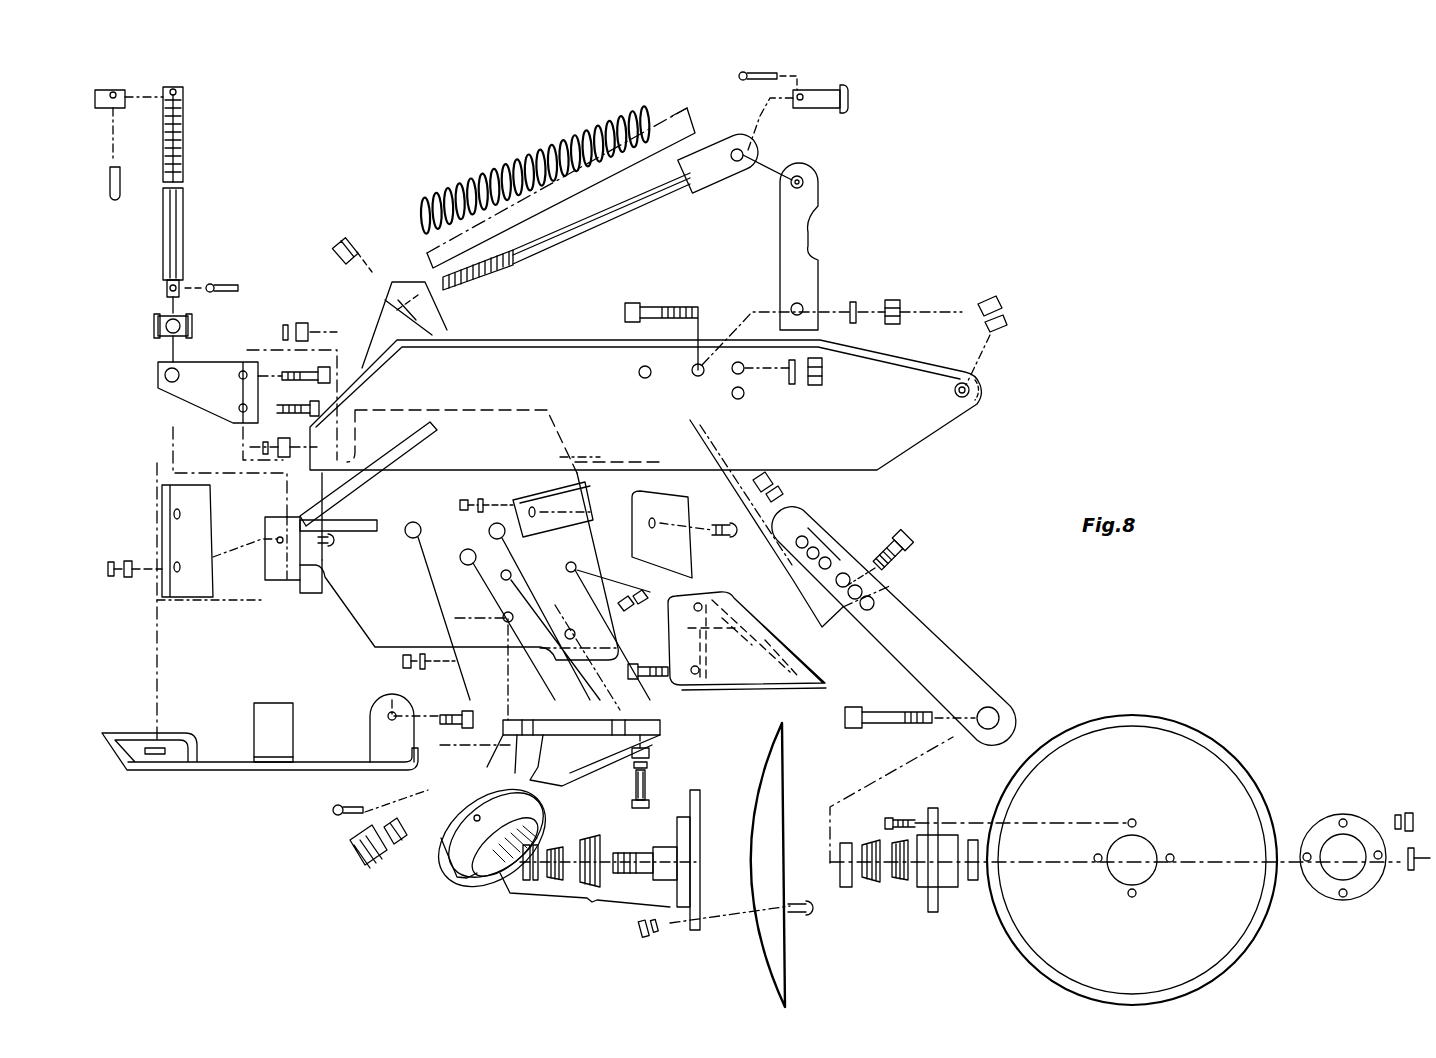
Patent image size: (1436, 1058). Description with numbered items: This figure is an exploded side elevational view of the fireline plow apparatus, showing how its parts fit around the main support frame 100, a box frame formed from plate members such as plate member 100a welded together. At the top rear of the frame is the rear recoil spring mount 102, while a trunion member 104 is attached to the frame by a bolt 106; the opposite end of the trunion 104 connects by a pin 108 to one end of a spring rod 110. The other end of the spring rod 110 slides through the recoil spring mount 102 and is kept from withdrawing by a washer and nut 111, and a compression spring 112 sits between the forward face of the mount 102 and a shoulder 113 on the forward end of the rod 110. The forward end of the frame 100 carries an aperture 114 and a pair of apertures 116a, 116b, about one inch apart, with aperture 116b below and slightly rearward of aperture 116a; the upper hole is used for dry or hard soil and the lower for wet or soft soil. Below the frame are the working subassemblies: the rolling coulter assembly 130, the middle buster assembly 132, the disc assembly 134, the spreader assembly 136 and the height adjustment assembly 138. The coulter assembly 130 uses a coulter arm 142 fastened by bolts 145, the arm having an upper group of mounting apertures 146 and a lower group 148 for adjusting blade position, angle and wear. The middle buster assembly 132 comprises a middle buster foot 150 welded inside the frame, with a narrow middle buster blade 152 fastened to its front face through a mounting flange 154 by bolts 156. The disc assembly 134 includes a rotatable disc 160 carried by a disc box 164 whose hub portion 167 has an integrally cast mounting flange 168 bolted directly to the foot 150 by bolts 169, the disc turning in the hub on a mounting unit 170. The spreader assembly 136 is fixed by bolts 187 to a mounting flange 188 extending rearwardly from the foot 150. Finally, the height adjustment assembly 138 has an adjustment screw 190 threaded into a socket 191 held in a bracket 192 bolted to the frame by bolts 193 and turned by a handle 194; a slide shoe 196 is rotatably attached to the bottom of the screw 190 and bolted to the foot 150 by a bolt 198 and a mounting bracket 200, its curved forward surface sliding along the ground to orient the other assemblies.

The main support frame 100 is at (495, 330).
The plate member 100a is at (522, 386).
The rear recoil spring mount 102 is at (408, 333).
The trunion member 104 is at (780, 250).
The bolt 106 is at (648, 300).
The pin 108 is at (825, 88).
The spring rod 110 is at (632, 205).
The washer and nut 111 is at (333, 246).
The compression spring 112 is at (492, 160).
The shoulder 113 is at (703, 185).
The aperture 114 is at (955, 390).
The aperture 116a is at (732, 375).
The aperture 116b is at (744, 396).
The rolling coulter assembly 130 is at (1200, 725).
The middle buster assembly 132 is at (725, 698).
The disc assembly 134 is at (505, 935).
The spreader assembly 136 is at (160, 517).
The height adjustment assembly 138 is at (215, 778).
The coulter arm 142 is at (935, 651).
The bolt 145 is at (918, 525).
The upper group of mounting apertures 146 is at (832, 535).
The lower group of mounting apertures 148 is at (855, 618).
The middle buster foot 150 is at (412, 609).
The middle buster blade 152 is at (735, 672).
The mounting flange 154 is at (706, 690).
The bolt 156 is at (668, 667).
The rotatable disc 160 is at (760, 968).
The disc box 164 is at (430, 838).
The hub portion 167 is at (457, 790).
The mounting flange 168 is at (580, 720).
The bolt 169 is at (652, 785).
The mounting unit 170 is at (656, 863).
The bolt 187 is at (332, 548).
The mounting flange 188 is at (290, 593).
The adjustment screw 190 is at (183, 210).
The socket 191 is at (155, 324).
The bracket 192 is at (195, 345).
The bolt 193 is at (285, 372).
The handle 194 is at (100, 110).
The slide shoe 196 is at (240, 758).
The bolt 198 is at (456, 710).
The mounting bracket 200 is at (372, 712).